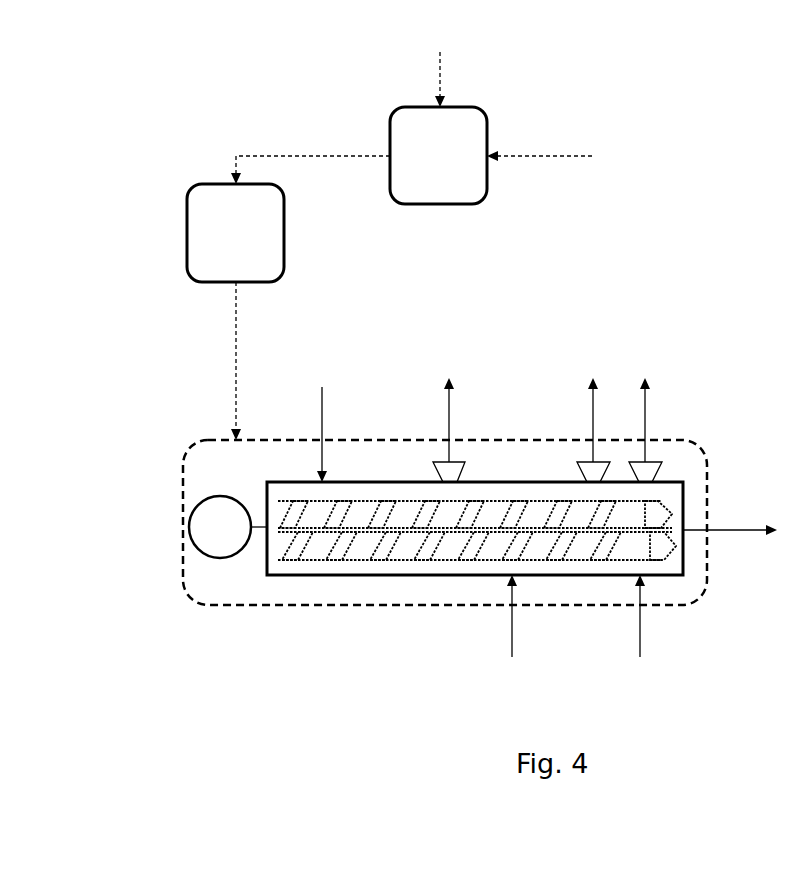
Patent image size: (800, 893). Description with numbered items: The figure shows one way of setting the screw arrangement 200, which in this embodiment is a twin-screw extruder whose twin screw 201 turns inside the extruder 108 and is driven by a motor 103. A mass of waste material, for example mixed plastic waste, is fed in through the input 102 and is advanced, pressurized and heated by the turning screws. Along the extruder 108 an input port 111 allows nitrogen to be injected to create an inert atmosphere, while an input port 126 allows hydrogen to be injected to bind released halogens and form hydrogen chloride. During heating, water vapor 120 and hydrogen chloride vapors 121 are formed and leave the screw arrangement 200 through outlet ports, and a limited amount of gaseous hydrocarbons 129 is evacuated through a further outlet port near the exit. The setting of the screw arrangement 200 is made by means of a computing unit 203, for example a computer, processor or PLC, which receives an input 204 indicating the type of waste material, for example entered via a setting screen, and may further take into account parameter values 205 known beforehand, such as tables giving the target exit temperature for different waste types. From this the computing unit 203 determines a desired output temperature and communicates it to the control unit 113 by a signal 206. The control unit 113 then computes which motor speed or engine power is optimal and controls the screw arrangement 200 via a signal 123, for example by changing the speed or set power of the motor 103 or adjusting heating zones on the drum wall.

The input 102 is at (322, 418).
The motor 103 is at (215, 557).
The extruder 108 is at (312, 575).
The input port 111 is at (640, 628).
The control unit 113 is at (188, 238).
The water vapor 120 is at (449, 428).
The hydrogen chloride vapors 121 is at (593, 422).
The signal 123 is at (236, 338).
The input port 126 is at (512, 615).
The gaseous hydrocarbons 129 is at (645, 422).
The screw arrangement 200 is at (182, 480).
The twin screw 201 is at (415, 555).
The computing unit 203 is at (462, 206).
The input 204 is at (573, 158).
The parameter values 205 is at (442, 80).
The signal 206 is at (272, 157).